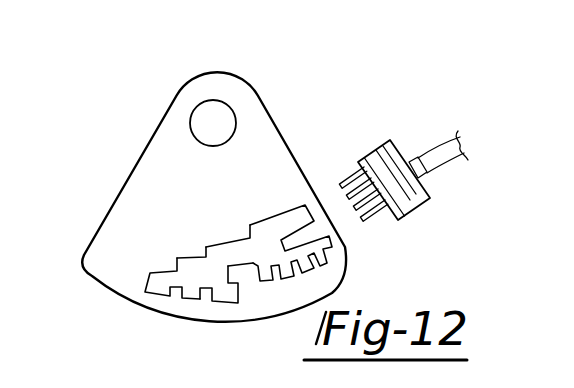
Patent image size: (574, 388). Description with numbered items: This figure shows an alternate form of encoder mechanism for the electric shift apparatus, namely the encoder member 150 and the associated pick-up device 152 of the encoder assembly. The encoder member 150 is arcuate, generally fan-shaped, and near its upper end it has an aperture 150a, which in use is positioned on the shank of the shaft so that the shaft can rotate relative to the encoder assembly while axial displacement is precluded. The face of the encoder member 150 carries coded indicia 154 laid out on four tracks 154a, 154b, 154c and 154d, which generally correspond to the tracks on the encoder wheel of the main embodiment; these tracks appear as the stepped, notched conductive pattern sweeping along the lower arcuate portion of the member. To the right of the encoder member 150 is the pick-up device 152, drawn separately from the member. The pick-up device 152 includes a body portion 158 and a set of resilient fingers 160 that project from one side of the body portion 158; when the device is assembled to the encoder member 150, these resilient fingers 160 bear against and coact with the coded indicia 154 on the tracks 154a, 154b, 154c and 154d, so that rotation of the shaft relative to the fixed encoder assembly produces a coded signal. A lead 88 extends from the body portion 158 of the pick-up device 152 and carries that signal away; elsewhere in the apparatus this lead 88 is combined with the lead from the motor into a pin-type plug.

The encoder member 150 is at (161, 120).
The aperture of encoder member 150a is at (228, 106).
The pick-up device 152 is at (393, 183).
The coded indicia 154 is at (177, 236).
The track 154a is at (150, 275).
The track 154b is at (178, 259).
The track 154c is at (206, 246).
The track 154d is at (249, 226).
The body portion 158 is at (378, 150).
The resilient fingers 160 is at (343, 179).
The lead 88 is at (436, 142).